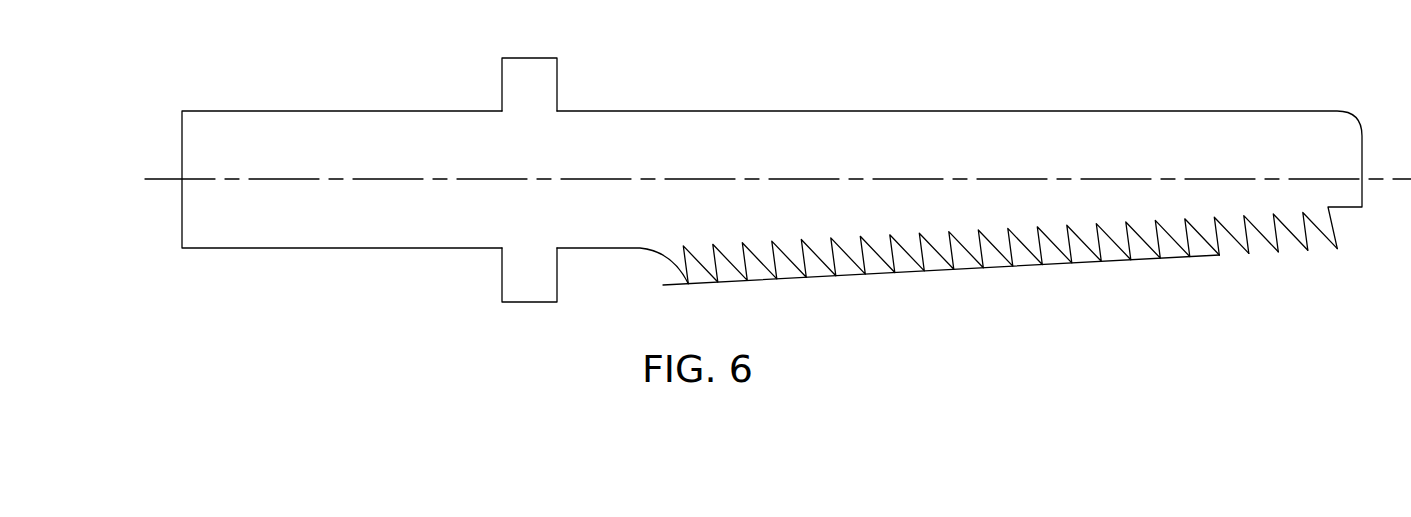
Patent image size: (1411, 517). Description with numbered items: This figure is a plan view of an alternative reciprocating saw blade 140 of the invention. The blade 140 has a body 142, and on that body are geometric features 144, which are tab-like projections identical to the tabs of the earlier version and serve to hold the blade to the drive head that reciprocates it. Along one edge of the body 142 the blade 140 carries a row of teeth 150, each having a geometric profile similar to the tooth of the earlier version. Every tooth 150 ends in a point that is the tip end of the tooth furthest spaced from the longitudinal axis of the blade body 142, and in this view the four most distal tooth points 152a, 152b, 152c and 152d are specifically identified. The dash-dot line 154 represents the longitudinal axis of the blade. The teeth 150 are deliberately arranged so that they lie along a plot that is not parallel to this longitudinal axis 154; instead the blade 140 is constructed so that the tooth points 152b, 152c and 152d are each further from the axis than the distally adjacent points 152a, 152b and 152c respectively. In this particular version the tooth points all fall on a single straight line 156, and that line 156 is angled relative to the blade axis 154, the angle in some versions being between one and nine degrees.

The reciprocating saw blade 140 is at (950, 93).
The body 142 is at (717, 158).
The geometric features 144 is at (537, 56).
The teeth 150 is at (1290, 215).
The tooth point 152a is at (1337, 252).
The tooth point 152b is at (1307, 258).
The tooth point 152c is at (1277, 257).
The tooth point 152d is at (1248, 257).
The longitudinal axis 154 is at (168, 175).
The line 156 is at (670, 287).